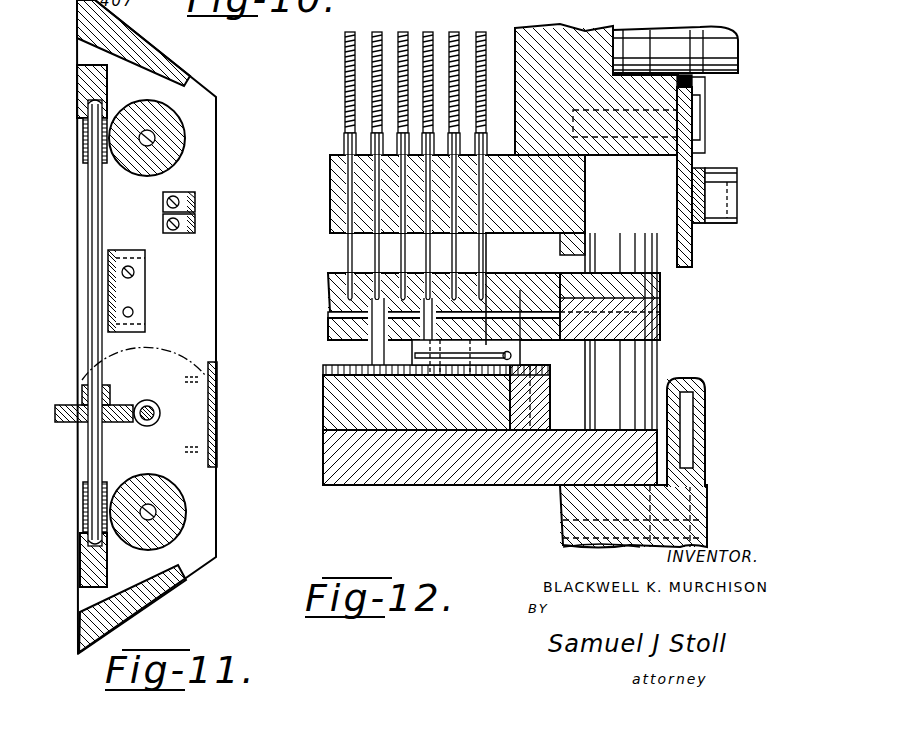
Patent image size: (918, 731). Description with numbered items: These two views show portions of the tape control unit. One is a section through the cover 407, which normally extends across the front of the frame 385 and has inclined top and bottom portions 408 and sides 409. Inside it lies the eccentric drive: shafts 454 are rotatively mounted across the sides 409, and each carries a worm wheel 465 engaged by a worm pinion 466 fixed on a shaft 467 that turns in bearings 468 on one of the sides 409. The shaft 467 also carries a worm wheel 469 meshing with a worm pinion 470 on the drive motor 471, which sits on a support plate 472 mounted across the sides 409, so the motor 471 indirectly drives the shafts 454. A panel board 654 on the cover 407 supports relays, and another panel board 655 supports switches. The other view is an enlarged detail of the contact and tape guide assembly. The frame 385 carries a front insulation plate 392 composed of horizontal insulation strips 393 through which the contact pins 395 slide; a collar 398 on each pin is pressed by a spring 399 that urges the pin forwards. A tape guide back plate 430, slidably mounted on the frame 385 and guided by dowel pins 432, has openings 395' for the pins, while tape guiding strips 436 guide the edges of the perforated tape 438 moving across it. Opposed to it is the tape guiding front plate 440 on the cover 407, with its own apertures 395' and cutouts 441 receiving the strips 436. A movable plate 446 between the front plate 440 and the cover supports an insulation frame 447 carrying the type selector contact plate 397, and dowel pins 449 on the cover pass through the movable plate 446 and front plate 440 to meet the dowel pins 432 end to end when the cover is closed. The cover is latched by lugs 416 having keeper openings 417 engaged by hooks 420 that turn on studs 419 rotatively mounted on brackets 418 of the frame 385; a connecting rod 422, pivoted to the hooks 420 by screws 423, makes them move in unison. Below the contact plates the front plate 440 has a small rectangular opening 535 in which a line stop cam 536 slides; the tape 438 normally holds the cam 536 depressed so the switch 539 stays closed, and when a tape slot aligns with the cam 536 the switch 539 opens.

In FIG. 12, the cover 407 is at (640, 549).
In FIG. 11, the inclined top and bottom portions 408 is at (128, 28).
In FIG. 11, the sides 409 is at (198, 90).
In FIG. 11, the shafts 454 is at (155, 146).
In FIG. 11, the worm wheels 465 is at (185, 136).
In FIG. 11, the worm pinions 466 is at (87, 128).
In FIG. 11, the shaft 467 is at (88, 197).
In FIG. 11, the bearings 468 is at (86, 80).
In FIG. 11, the worm wheel 469 is at (57, 424).
In FIG. 11, the worm pinion 470 is at (165, 389).
In FIG. 11, the drive motor 471 is at (205, 470).
In FIG. 11, the support plate 472 is at (212, 355).
In FIG. 11, the panel board 654 is at (118, 298).
In FIG. 11, the panel board 655 is at (196, 200).
In FIG. 12, the frame 385 is at (565, 32).
In FIG. 12, the front insulation plate 392 is at (330, 170).
In FIG. 12, the horizontal insulation strips 393 is at (340, 183).
In FIG. 12, the contact pins 395 is at (384, 227).
In FIG. 12, the openings 395' is at (352, 331).
In FIG. 12, the type selector contact plate 397 is at (335, 370).
In FIG. 12, the collar 398 is at (344, 142).
In FIG. 12, the springs 399 is at (345, 88).
In FIG. 12, the lugs 416 is at (700, 495).
In FIG. 12, the keeper openings 417 is at (700, 410).
In FIG. 12, the brackets 418 is at (695, 87).
In FIG. 12, the studs 419 is at (718, 55).
In FIG. 12, the hooks 420 is at (694, 255).
In FIG. 12, the connecting rod 422 is at (696, 222).
In FIG. 12, the screws 423 is at (712, 175).
In FIG. 12, the tape guide back plate 430 is at (330, 278).
In FIG. 12, the dowel pins 432 is at (650, 258).
In FIG. 12, the tape guiding strips 436 is at (662, 328).
In FIG. 12, the perforated tape 438 is at (330, 316).
In FIG. 12, the tape guiding front plate 440 is at (330, 338).
In FIG. 12, the cutouts 441 is at (565, 345).
In FIG. 12, the movable plate 446 is at (345, 448).
In FIG. 12, the insulation frame 447 is at (333, 412).
In FIG. 12, the dowel pins 449 is at (632, 365).
In FIG. 12, the small rectangular opening 535 is at (490, 352).
In FIG. 12, the line stop cam 536 is at (512, 354).
In FIG. 12, the switch 539 is at (487, 300).